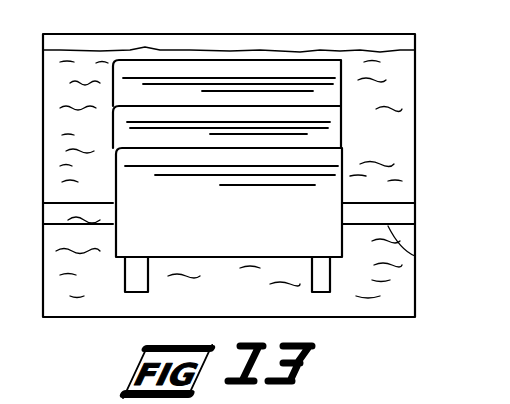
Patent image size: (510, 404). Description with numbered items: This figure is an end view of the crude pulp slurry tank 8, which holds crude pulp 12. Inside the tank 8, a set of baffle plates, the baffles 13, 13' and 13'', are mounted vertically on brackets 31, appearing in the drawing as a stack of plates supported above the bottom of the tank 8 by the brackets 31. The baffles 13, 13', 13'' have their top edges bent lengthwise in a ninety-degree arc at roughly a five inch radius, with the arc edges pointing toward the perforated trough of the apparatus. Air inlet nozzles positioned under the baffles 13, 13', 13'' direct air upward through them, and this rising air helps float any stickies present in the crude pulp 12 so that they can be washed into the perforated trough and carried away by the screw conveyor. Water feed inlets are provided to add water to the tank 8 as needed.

The crude pulp 12 is at (92, 68).
The crude pulp slurry tank 8 is at (415, 244).
The baffle 13'' is at (283, 83).
The baffle 13' is at (282, 127).
The baffle 13 is at (281, 202).
The bracket 31 is at (130, 275).